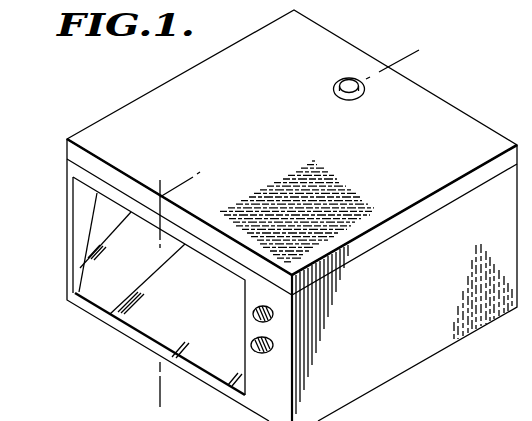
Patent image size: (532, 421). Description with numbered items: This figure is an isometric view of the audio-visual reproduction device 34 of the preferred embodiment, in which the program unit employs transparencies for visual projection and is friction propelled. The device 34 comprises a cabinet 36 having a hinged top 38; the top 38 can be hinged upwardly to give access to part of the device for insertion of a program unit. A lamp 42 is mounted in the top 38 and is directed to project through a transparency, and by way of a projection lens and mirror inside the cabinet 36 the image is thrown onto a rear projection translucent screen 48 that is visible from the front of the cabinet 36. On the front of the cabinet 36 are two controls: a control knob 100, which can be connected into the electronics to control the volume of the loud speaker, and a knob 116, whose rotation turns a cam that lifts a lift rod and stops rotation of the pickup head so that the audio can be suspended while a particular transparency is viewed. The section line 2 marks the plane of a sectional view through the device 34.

The audio-visual reproduction device 34 is at (108, 94).
The cabinet 36 is at (433, 333).
The hinged top 38 is at (456, 125).
The lamp 42 is at (351, 81).
The rear projection translucent screen 48 is at (153, 323).
The control knob 100 is at (251, 347).
The knob 116 is at (253, 311).
The section line 2- 2 is at (168, 395).